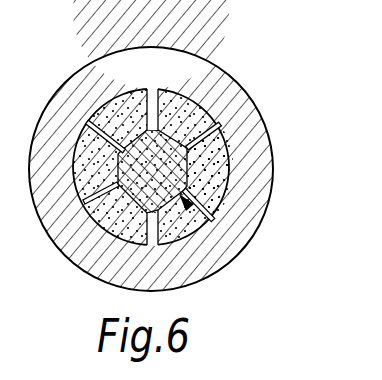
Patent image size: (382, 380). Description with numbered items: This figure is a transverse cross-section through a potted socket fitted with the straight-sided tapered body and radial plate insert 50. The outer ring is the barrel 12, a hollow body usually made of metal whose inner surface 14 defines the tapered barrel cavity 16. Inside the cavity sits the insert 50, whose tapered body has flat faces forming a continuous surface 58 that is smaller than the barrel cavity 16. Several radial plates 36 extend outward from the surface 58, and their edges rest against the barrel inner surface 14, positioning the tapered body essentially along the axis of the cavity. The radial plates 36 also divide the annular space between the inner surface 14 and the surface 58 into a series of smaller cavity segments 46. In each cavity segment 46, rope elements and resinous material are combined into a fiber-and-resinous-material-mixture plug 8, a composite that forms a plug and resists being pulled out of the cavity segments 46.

The fiber-and-resinous-material-mixture plug 8 is at (226, 149).
The barrel 12 is at (157, 47).
The inner surface 14 is at (118, 100).
The barrel cavity 16 is at (97, 112).
The radial plates 36 is at (221, 124).
The cavity segments 46 is at (176, 99).
The straight-sided tapered body and radial plate insert 50 is at (190, 212).
The continuous surface 58 is at (214, 128).